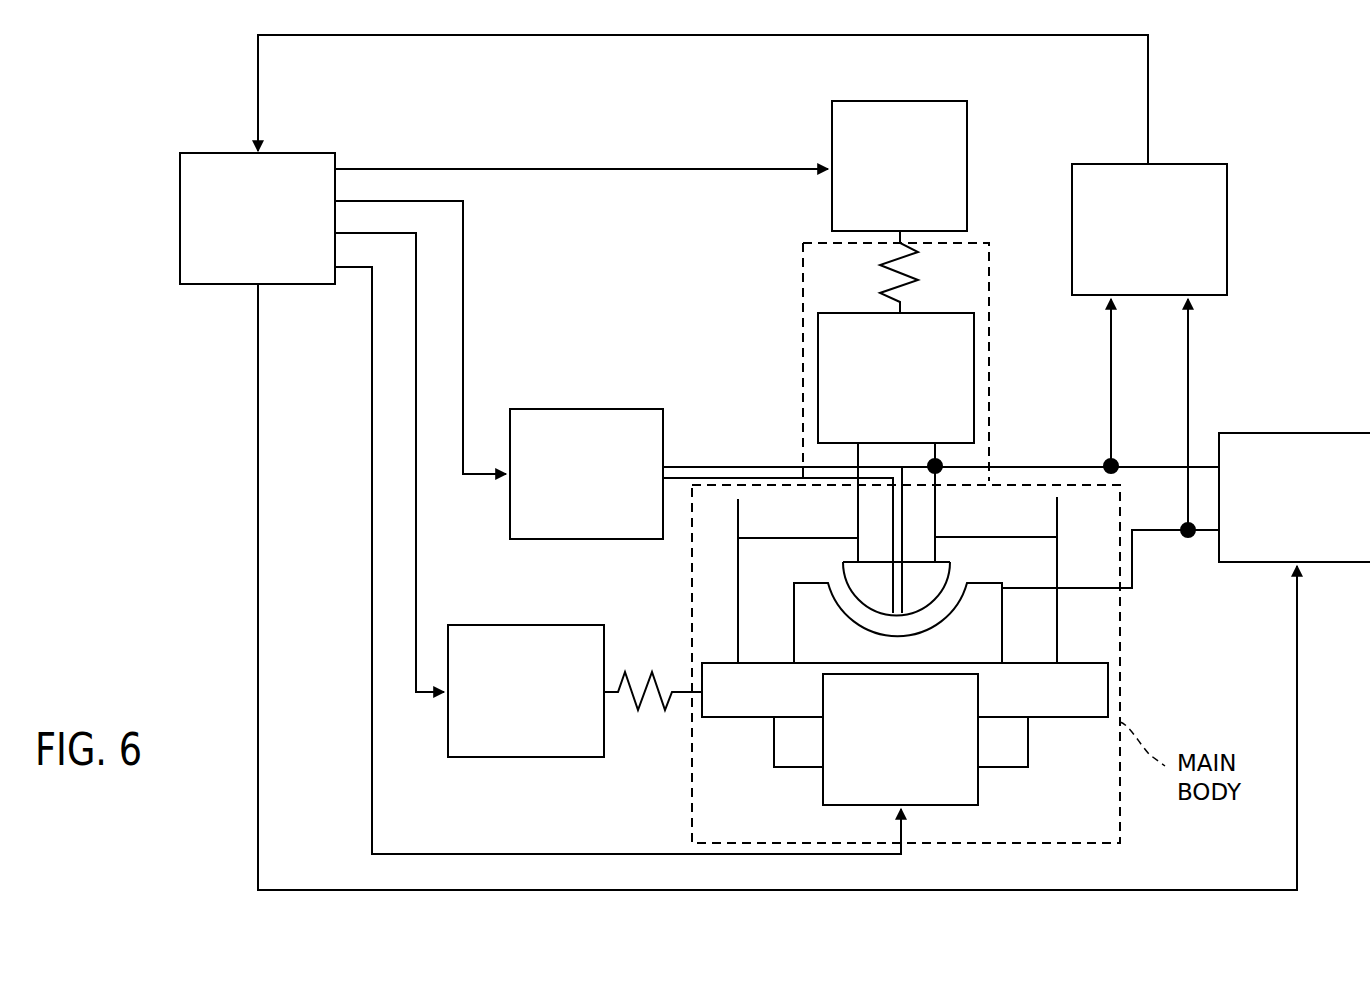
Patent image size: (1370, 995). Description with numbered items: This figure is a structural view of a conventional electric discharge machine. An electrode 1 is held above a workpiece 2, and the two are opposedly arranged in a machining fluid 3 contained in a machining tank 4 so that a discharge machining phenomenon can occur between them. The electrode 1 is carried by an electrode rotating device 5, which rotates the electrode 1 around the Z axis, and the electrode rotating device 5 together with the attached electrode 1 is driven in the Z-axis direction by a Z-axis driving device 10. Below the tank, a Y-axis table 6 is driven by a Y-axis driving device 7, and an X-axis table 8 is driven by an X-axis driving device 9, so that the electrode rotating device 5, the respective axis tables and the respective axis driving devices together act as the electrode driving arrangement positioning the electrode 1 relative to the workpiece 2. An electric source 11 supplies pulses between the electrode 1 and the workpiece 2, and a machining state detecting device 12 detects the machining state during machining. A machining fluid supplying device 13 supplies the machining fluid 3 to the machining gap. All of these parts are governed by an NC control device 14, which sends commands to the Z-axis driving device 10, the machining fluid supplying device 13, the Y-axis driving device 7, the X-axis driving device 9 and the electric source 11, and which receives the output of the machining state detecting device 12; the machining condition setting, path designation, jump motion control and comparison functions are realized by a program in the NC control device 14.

The electrode 1 is at (938, 497).
The workpiece 2 is at (818, 583).
The machining fluid 3 is at (748, 620).
The machining tank 4 is at (1058, 560).
The electrode rotating device 5 is at (976, 380).
The Y-axis table 6 is at (1110, 687).
The Y-axis driving device 7 is at (510, 757).
The X-axis table 8 is at (1030, 740).
The X-axis driving device 9 is at (980, 783).
The Z-axis driving device 10 is at (968, 156).
The electric source 11 is at (1273, 432).
The machining state detecting device 12 is at (1175, 163).
The machining fluid supplying device 13 is at (605, 409).
The NC control device 14 is at (337, 158).